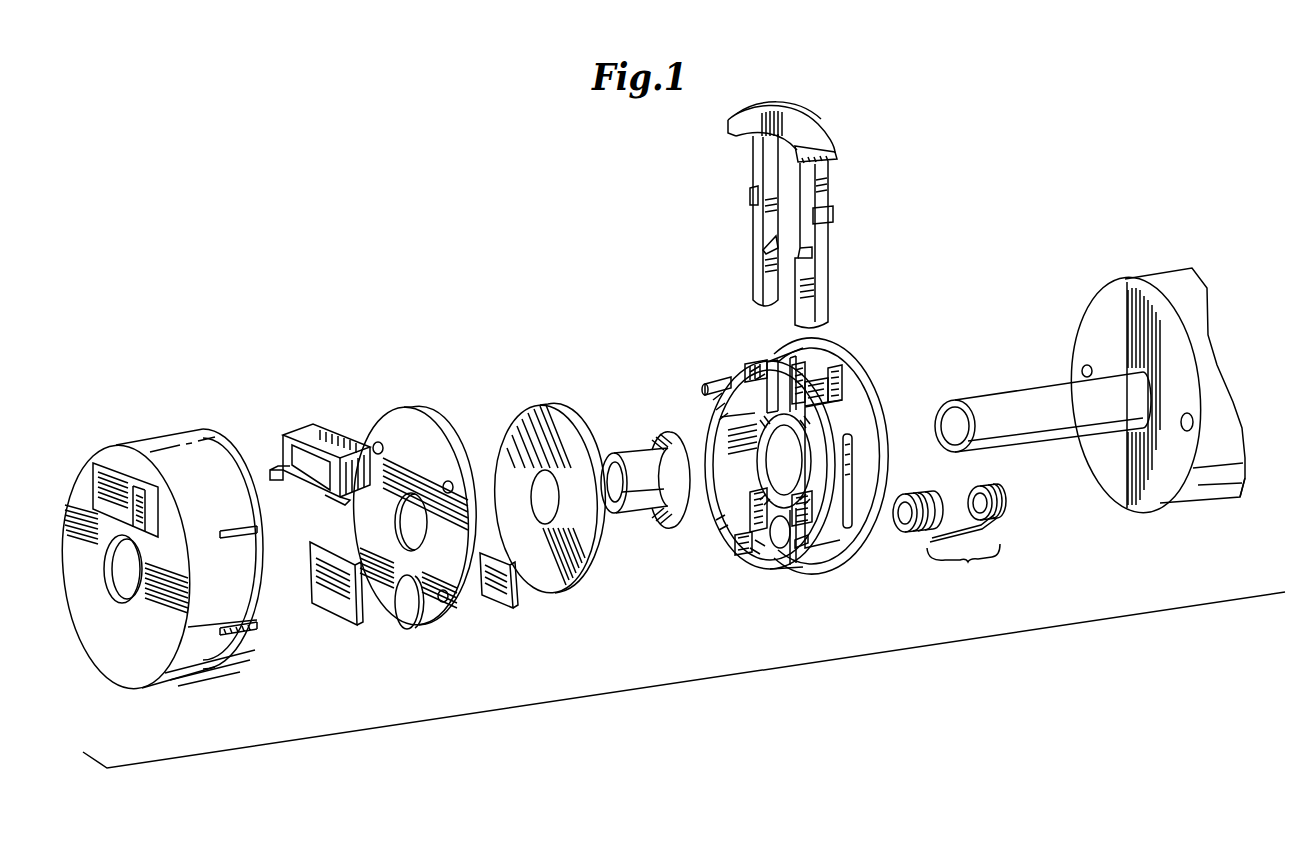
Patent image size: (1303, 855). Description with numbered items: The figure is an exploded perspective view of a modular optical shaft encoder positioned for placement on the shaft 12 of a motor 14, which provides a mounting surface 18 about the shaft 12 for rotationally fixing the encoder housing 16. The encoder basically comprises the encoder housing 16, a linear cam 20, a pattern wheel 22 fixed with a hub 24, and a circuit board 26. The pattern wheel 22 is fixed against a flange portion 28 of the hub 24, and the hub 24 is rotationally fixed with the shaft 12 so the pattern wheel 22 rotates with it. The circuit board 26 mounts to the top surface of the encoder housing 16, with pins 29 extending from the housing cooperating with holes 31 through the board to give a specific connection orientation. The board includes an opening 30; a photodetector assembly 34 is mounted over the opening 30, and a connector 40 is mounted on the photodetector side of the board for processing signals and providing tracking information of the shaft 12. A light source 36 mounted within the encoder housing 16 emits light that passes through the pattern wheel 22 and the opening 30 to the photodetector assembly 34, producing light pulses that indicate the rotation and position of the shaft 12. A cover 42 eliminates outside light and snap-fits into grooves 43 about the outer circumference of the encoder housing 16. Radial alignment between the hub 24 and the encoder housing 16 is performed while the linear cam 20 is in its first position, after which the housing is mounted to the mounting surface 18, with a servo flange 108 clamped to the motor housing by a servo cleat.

The shaft 12 is at (1010, 410).
The motor 14 is at (1203, 488).
The encoder housing 16 is at (868, 400).
The mounting surface 18 is at (1102, 338).
The linear cam 20 is at (739, 209).
The pattern wheel 22 is at (555, 430).
The hub 24 is at (647, 492).
The circuit board 26 is at (413, 428).
The flange portion 28 is at (668, 512).
The pins 29 is at (703, 385).
The opening 30 is at (405, 608).
The holes 31 is at (378, 444).
The photodetector assembly 34 is at (333, 608).
The light source 36 is at (949, 539).
The connector 40 is at (310, 432).
The cover 42 is at (125, 657).
The grooves 43 is at (855, 526).
The servo flange 108 is at (838, 354).